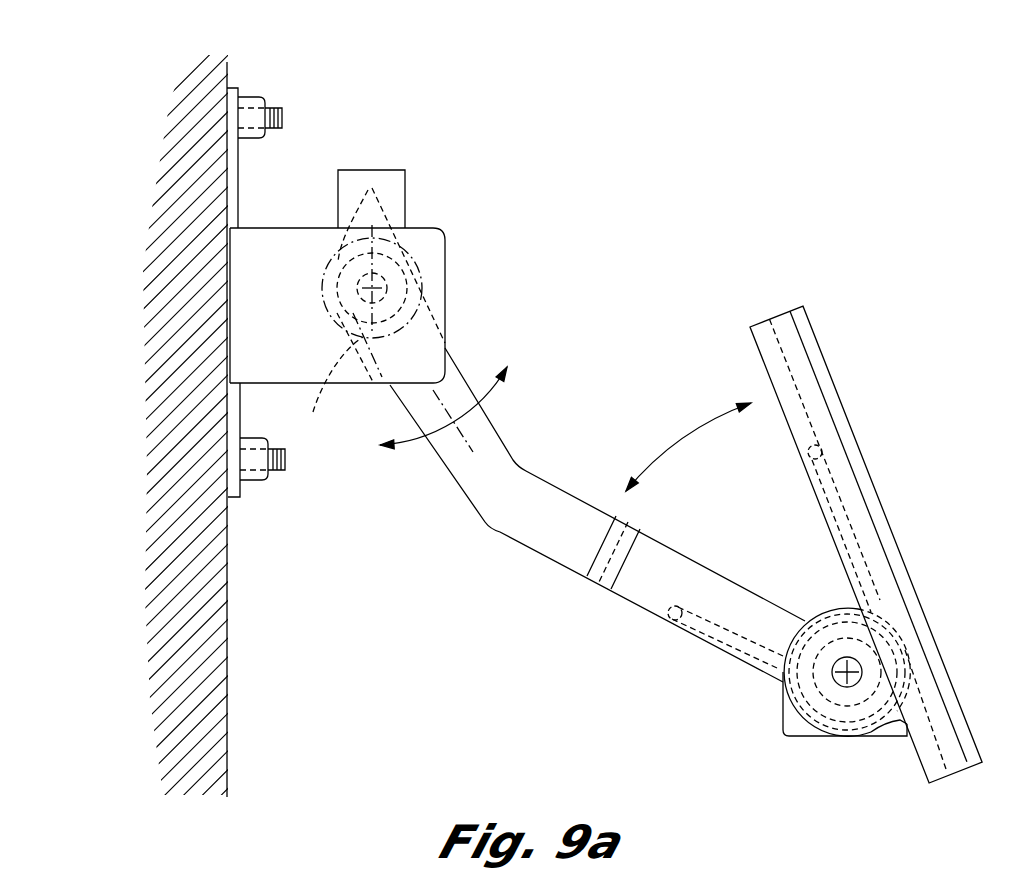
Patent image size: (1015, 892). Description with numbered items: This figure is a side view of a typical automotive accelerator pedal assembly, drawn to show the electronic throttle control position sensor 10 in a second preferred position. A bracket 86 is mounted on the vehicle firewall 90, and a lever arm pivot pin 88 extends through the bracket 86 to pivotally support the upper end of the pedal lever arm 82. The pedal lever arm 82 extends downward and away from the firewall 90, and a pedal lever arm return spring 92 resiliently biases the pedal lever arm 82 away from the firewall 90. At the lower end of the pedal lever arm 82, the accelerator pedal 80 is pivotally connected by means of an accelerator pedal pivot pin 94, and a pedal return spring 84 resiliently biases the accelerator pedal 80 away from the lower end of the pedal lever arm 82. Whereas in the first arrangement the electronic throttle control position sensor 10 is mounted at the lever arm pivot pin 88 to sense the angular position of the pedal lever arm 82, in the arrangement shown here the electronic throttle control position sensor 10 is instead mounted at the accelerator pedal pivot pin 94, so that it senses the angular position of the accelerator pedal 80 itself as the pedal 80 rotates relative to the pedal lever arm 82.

The electronic throttle control position sensor 10 is at (775, 710).
The accelerator pedal 80 is at (821, 352).
The pedal lever arm 82 is at (503, 432).
The pedal return spring 84 is at (684, 607).
The bracket 86 is at (442, 226).
The lever arm pivot pin 88 is at (410, 268).
The vehicle firewall 90 is at (229, 570).
The pedal lever arm return spring 92 is at (331, 388).
The accelerator pedal pivot pin 94 is at (846, 668).